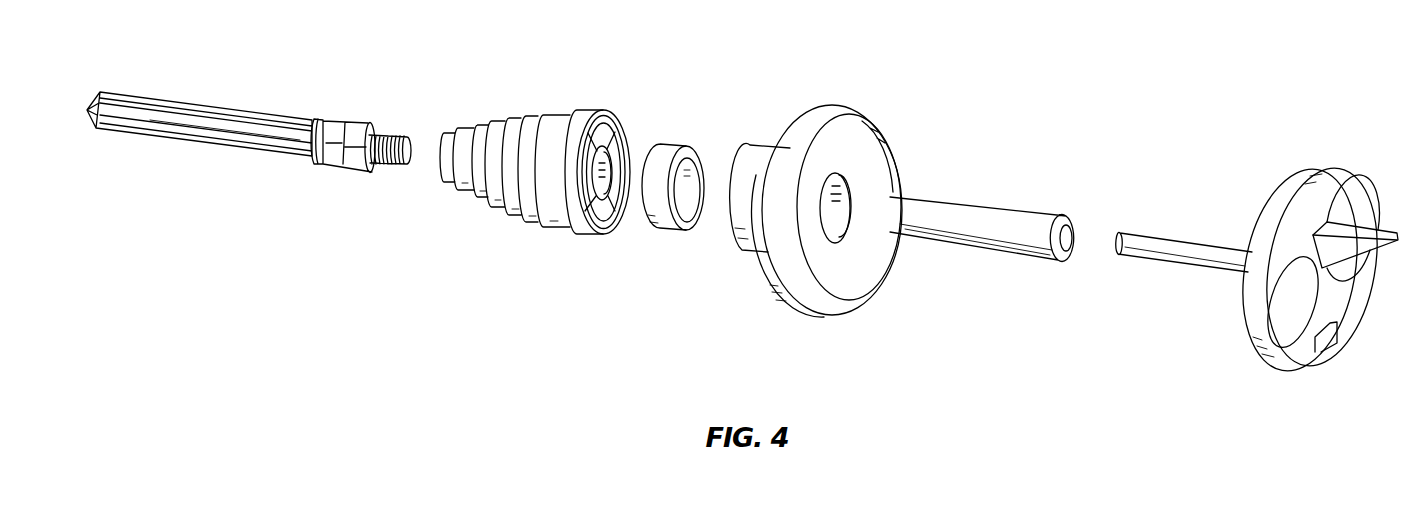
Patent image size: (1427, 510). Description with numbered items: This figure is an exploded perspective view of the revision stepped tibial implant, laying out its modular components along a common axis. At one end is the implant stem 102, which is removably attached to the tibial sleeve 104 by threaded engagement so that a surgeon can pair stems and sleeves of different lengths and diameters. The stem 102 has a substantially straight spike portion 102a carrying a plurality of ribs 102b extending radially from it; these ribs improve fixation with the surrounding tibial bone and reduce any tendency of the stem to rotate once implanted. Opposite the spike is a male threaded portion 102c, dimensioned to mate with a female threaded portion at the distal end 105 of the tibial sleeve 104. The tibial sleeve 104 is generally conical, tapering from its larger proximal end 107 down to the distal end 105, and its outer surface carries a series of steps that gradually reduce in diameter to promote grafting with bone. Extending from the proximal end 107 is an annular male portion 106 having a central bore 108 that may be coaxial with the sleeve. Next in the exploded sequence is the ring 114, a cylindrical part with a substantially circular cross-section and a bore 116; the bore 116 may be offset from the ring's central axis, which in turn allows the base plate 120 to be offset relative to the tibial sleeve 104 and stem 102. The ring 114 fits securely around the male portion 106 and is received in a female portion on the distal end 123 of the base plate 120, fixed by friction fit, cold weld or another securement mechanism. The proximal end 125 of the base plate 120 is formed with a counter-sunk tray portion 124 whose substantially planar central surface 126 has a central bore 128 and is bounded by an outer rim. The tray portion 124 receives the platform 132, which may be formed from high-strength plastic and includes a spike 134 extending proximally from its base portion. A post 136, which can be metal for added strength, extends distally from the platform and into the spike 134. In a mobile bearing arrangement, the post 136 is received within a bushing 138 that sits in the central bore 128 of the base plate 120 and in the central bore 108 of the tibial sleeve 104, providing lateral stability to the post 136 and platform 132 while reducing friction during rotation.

The implant stem 102 is at (273, 119).
The spike portion 102a is at (168, 103).
The ribs 102b is at (213, 122).
The male threaded portion 102c is at (401, 136).
The tibial sleeve 104 is at (532, 171).
The distal end 105 is at (447, 202).
The annular male portion 106 is at (612, 140).
The proximal end 107 is at (589, 255).
The central bore 108 is at (603, 117).
The offset ring 114 is at (691, 140).
The bore 116 is at (688, 185).
The base plate 120 is at (858, 193).
The distal end 123 is at (760, 129).
The tray portion 124 is at (838, 259).
The proximal end 125 is at (824, 99).
The central surface 126 is at (867, 157).
The central bore 128 is at (841, 203).
The platform 132 is at (1321, 251).
The spike 134 is at (1385, 232).
The post 136 is at (1172, 247).
The bushing 138 is at (1035, 223).